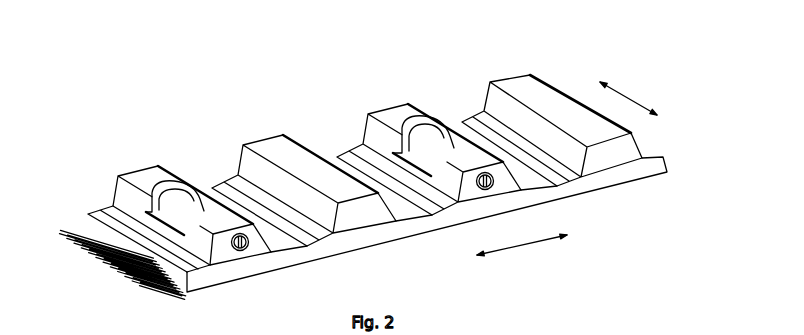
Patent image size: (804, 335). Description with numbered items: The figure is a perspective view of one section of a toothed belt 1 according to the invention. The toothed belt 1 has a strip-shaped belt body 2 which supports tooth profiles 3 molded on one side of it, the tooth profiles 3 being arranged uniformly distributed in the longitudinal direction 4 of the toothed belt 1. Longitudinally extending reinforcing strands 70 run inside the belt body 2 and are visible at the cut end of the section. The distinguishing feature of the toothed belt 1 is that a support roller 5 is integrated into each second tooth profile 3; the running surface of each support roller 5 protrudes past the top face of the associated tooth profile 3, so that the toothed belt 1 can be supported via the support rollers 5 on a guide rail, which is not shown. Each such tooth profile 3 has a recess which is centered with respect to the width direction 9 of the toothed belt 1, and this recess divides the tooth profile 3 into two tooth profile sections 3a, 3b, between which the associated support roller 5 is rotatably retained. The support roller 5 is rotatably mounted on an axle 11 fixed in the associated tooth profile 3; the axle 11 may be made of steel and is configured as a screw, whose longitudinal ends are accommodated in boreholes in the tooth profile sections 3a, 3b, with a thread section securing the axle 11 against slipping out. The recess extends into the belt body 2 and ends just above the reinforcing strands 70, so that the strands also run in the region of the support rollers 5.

The toothed belt 1 is at (196, 113).
The belt body 2 is at (658, 172).
The tooth profile 3 is at (134, 163).
The tooth profile section 3a is at (214, 243).
The tooth profile section 3b is at (128, 198).
The longitudinal direction 4 is at (538, 243).
The support roller 5 is at (193, 193).
The width direction 9 is at (627, 98).
The axle 11 is at (246, 250).
The reinforcing strands 70 is at (107, 262).